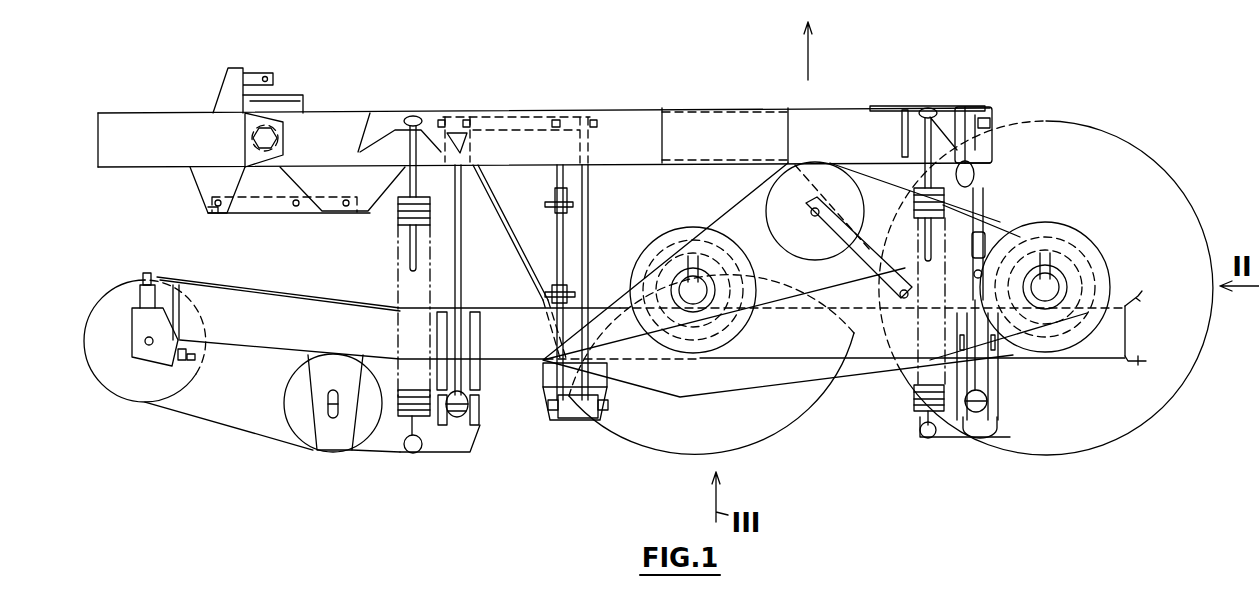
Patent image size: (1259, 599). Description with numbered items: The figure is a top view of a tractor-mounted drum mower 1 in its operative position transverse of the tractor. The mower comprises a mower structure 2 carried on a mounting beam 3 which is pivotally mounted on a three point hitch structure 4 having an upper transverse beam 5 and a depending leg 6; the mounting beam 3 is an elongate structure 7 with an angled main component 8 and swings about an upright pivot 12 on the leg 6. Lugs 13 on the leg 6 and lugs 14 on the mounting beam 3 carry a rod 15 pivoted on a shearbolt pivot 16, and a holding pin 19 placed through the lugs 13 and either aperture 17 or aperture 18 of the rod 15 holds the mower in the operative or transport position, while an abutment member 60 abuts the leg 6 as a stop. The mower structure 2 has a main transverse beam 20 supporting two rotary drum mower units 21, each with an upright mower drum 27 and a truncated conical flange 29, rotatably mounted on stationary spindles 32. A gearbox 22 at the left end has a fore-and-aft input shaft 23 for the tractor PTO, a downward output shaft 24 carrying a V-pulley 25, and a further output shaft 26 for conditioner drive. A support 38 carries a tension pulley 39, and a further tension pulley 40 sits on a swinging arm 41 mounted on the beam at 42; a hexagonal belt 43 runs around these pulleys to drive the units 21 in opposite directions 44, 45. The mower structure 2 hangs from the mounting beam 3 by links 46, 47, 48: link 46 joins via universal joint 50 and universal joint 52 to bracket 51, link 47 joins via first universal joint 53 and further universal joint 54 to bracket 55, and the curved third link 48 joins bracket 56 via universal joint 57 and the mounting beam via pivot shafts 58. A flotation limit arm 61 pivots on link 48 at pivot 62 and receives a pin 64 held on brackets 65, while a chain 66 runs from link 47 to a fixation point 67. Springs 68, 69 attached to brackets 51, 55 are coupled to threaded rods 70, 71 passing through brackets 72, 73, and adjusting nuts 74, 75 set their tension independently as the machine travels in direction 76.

The drum mower 1 is at (1098, 107).
The mower structure 2 is at (1025, 470).
The mounting beam 3 is at (835, 100).
The three point hitch structure 4 is at (112, 113).
The upper transverse beam 5 is at (160, 113).
The depending leg 6 is at (228, 85).
The elongate structure 7 is at (659, 93).
The angled main component 8 is at (884, 106).
The upright pivot 12 is at (283, 128).
The lugs 13 is at (198, 198).
The lugs 14 is at (376, 207).
The rod 15 is at (285, 213).
The pivot 16 is at (346, 207).
The aperture 17 is at (214, 213).
The aperture 18 is at (299, 207).
The holding pin 19 is at (212, 207).
The main transverse beam 20 is at (868, 360).
The rotary drum mower unit 21 is at (804, 430).
The gearbox 22 is at (146, 345).
The input shaft 23 is at (143, 275).
The output shaft 24 is at (182, 362).
The V-pulley 25 is at (114, 393).
The further output shaft 26 is at (195, 360).
The mower drum 27 is at (758, 272).
The truncated conical flange 29 is at (891, 328).
The stationary spindle 32 is at (700, 280).
The support 38 is at (352, 450).
The tension pulley 39 is at (290, 430).
The further tension pulley 40 is at (832, 262).
The swinging arm 41 is at (860, 240).
The arm mounting 42 is at (903, 285).
The hexagonal belt 43 is at (518, 433).
The direction of rotation 44 is at (688, 341).
The direction of rotation 45 is at (1086, 334).
The link 46 is at (462, 250).
The link 47 is at (990, 375).
The third link 48 is at (520, 272).
The universal joint 50 is at (455, 118).
The bracket 51 is at (482, 392).
The universal joint 52 is at (458, 418).
The first universal joint 53 is at (985, 108).
The further universal joint 54 is at (1000, 434).
The bracket 55 is at (968, 412).
The bracket 56 is at (552, 412).
The universal joint 57 is at (580, 418).
The pivot shafts 58 is at (548, 122).
The abutment member 60 is at (296, 95).
The flotation limit arm 61 is at (566, 248).
The pivot 62 is at (578, 297).
The pin 64 is at (575, 206).
The brackets 65 is at (548, 180).
The chain 66 is at (982, 272).
The fixation point 67 is at (975, 172).
The spring 68 is at (398, 284).
The spring 69 is at (920, 412).
The threaded rod 70 is at (417, 180).
The threaded rod 71 is at (925, 165).
The bracket 72 is at (392, 128).
The bracket 73 is at (958, 105).
The adjusting nut 74 is at (418, 118).
The adjusting nut 75 is at (930, 108).
The direction of travel 76 is at (810, 57).